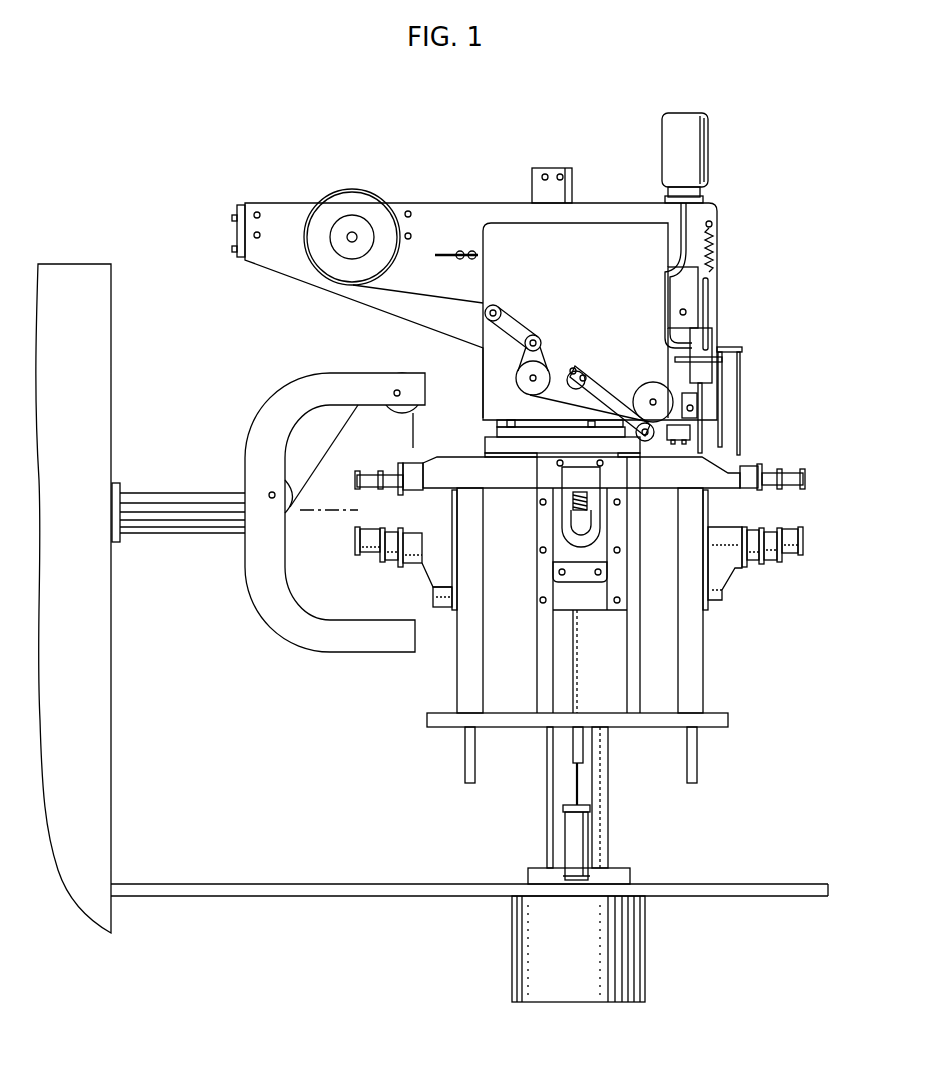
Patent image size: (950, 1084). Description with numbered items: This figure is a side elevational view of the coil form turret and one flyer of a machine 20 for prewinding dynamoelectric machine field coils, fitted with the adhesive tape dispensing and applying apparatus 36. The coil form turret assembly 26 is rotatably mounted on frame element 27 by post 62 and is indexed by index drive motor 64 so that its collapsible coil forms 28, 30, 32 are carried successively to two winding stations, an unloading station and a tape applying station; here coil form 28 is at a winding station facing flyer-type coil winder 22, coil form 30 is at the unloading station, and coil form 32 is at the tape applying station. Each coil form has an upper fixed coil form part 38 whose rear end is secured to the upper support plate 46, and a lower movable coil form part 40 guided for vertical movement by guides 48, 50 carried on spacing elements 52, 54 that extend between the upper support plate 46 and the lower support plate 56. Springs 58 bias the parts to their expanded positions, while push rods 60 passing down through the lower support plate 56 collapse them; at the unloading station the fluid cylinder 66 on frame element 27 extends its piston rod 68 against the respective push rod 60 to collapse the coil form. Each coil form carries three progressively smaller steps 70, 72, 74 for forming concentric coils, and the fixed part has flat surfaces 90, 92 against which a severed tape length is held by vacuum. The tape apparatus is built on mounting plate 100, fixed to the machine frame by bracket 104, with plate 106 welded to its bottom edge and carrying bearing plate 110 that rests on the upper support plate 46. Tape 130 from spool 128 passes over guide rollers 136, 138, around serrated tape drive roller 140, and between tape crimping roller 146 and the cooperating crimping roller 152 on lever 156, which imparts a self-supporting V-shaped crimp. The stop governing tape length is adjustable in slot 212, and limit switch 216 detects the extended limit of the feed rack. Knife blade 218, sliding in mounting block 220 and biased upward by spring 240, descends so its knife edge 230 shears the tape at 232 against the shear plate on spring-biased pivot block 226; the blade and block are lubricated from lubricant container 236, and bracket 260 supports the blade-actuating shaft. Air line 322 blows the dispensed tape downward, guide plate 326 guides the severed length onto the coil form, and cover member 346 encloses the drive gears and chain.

The machine 20 is at (153, 801).
The flyer-type coil winder 22 is at (256, 622).
The coil form turret assembly 26 is at (433, 656).
The frame element 27 is at (735, 872).
The coil form 28 is at (390, 561).
The coil form 30 is at (597, 537).
The coil form 32 is at (777, 548).
The adhesive tape dispensing and applying apparatus 36 is at (616, 186).
The upper fixed coil form part 38 is at (803, 464).
The lower movable coil form part 40 is at (746, 574).
The upper support plate 46 is at (633, 490).
The guide 48 is at (540, 568).
The guide 50 is at (625, 571).
The spacing element 52 is at (538, 635).
The spacing element 54 is at (630, 637).
The lower support plate 56 is at (730, 710).
The spring 58 is at (570, 500).
The push rod 60 is at (578, 637).
The post 62 is at (547, 783).
The index drive motor 64 is at (647, 928).
The fluid cylinder 66 is at (588, 840).
The piston rod 68 is at (580, 783).
The step 70 is at (750, 530).
The step 72 is at (768, 530).
The step 74 is at (789, 532).
The flat surface 90 is at (768, 475).
The flat surface 92 is at (792, 476).
The mounting plate 100 is at (416, 204).
The bracket 104 is at (232, 238).
The plate 106 is at (500, 425).
The bearing plate 110 is at (485, 445).
The spool 128 is at (337, 190).
The tape 130 is at (401, 293).
The guide roller 136 is at (488, 306).
The guide roller 138 is at (528, 337).
The tape drive roller 140 is at (542, 368).
The tape crimping roller 146 is at (640, 392).
The crimping roller 152 is at (650, 441).
The lever 156 is at (575, 364).
The slot 212 is at (442, 252).
The limit switch 216 is at (540, 167).
The knife blade 218 is at (716, 306).
The mounting block 220 is at (705, 343).
The pivot block 226 is at (682, 398).
The knife edge 230 is at (705, 437).
The severing point 232 is at (678, 357).
The lubricant container 236 is at (716, 135).
The spring 240 is at (713, 249).
The bracket 260 is at (683, 284).
The air line 322 is at (734, 394).
The guide plate 326 is at (744, 373).
The cover member 346 is at (592, 257).